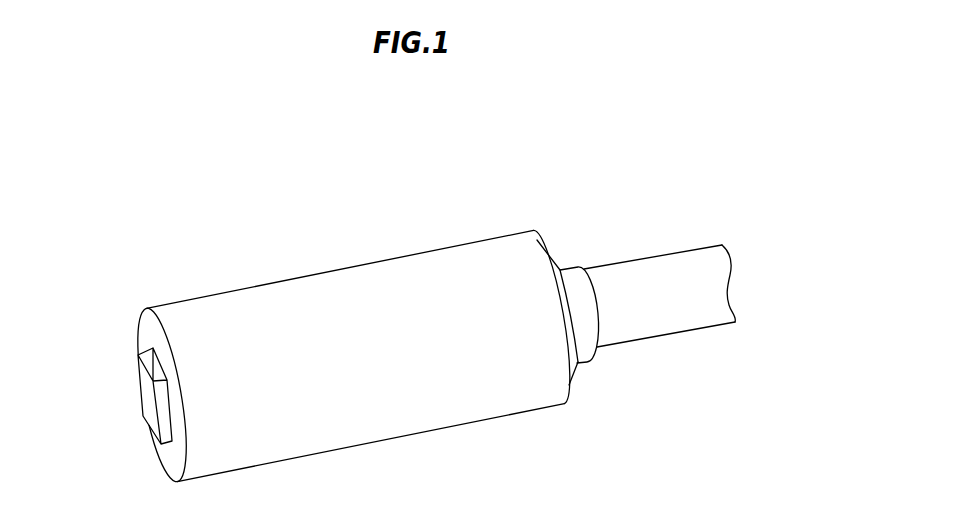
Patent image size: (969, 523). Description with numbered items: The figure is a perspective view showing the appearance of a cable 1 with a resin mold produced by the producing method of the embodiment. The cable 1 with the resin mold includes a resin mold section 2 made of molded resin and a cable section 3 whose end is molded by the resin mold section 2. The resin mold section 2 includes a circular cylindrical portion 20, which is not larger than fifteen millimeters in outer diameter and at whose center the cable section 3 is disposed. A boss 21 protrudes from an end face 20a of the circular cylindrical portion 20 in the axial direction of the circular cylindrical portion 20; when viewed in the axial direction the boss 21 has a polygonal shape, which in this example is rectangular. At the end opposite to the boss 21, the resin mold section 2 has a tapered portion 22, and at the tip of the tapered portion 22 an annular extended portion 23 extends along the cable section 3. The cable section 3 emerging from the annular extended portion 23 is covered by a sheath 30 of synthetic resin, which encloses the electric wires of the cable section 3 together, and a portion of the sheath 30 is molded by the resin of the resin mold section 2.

The cable with resin mold 1 is at (315, 190).
The resin mold section 2 is at (457, 442).
The cable section 3 is at (658, 350).
The circular cylindrical portion 20 is at (303, 445).
The end face 20a is at (175, 458).
The boss 21 is at (148, 400).
The tapered portion 22 is at (555, 275).
The annular extended portion 23 is at (577, 273).
The sheath 30 is at (668, 267).